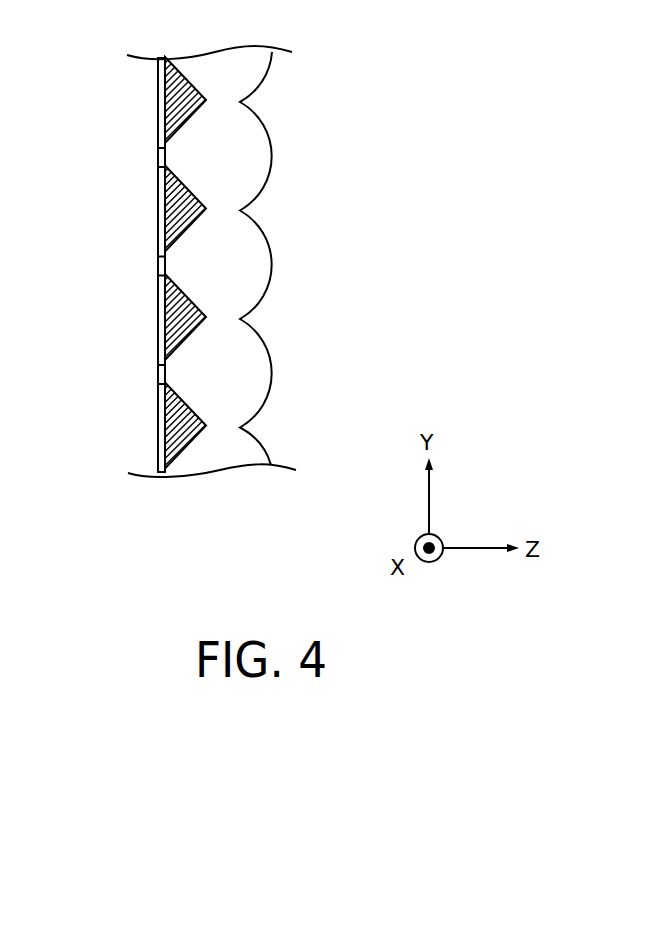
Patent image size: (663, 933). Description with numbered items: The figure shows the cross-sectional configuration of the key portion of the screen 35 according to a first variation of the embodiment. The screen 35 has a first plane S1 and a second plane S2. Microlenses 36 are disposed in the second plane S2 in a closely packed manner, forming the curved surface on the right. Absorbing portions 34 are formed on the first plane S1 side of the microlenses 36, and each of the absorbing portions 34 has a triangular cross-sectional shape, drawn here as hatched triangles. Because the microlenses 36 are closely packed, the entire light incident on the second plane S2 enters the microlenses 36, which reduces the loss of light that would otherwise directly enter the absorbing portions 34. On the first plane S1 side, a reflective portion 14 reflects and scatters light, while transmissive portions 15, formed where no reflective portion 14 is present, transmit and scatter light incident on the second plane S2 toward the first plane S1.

The reflective portion 14 is at (160, 102).
The transmissive portion 15 is at (160, 158).
The absorbing portion 34 is at (170, 250).
The screen 35 is at (253, 242).
The microlens 36 is at (274, 156).
The first plane S1 is at (145, 313).
The second plane S2 is at (286, 274).